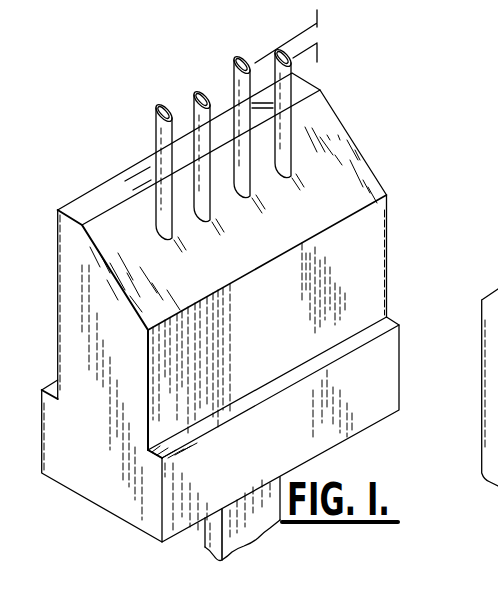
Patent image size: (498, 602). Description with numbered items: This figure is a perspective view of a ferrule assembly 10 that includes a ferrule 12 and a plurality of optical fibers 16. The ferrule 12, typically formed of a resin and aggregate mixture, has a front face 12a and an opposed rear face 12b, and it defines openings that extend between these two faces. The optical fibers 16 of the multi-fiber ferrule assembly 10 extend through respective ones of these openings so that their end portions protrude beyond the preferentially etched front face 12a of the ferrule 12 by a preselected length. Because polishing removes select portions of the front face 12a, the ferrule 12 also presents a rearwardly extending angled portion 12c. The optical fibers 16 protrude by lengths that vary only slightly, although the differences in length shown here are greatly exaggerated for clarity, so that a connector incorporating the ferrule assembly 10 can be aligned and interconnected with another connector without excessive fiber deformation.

The ferrule assembly 10 is at (259, 285).
The ferrule 12 is at (242, 317).
The front face 12a is at (87, 222).
The rear face 12b is at (94, 504).
The rearwardly extending angled portion 12c is at (365, 185).
The optical fibers 16 is at (288, 122).